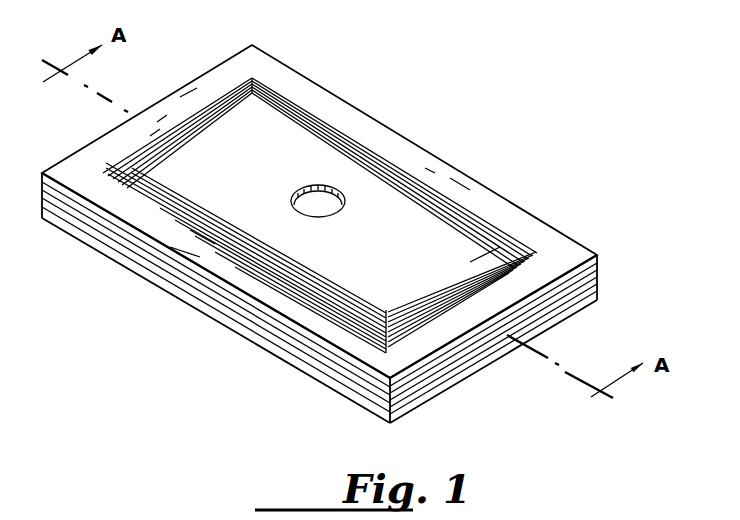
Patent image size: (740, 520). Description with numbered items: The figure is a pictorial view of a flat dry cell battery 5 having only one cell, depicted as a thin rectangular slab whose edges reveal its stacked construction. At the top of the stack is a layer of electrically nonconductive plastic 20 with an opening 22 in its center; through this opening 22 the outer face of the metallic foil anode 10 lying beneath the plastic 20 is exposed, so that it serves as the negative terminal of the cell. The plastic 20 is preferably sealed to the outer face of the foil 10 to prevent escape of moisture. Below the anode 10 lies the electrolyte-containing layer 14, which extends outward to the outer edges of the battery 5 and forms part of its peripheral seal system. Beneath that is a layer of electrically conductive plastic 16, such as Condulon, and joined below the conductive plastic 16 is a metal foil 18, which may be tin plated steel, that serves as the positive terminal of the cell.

The dry cell battery 5 is at (503, 170).
The metallic foil anode 10 is at (599, 270).
The electrolyte-containing layer 14 is at (600, 284).
The electrically conductive plastic 16 is at (600, 290).
The metal foil 18 is at (590, 302).
The electrically nonconductive plastic 20 is at (599, 258).
The opening 22 is at (322, 200).